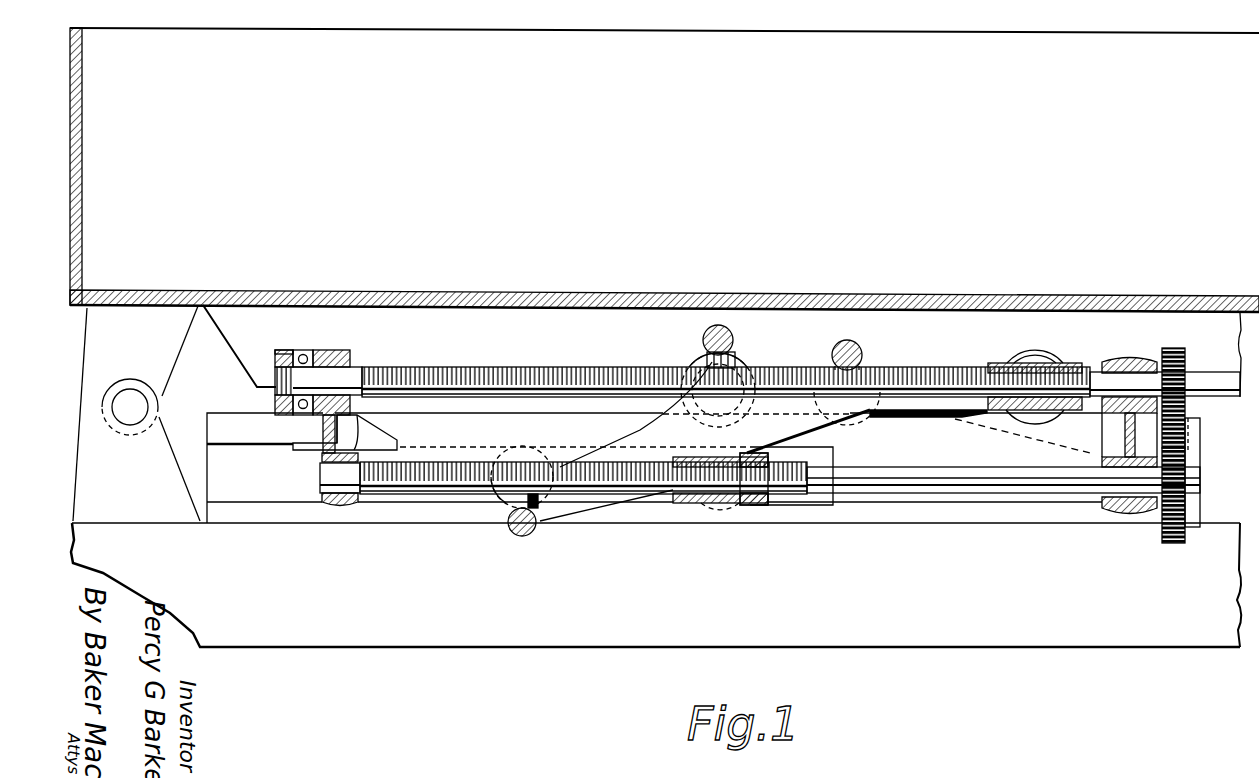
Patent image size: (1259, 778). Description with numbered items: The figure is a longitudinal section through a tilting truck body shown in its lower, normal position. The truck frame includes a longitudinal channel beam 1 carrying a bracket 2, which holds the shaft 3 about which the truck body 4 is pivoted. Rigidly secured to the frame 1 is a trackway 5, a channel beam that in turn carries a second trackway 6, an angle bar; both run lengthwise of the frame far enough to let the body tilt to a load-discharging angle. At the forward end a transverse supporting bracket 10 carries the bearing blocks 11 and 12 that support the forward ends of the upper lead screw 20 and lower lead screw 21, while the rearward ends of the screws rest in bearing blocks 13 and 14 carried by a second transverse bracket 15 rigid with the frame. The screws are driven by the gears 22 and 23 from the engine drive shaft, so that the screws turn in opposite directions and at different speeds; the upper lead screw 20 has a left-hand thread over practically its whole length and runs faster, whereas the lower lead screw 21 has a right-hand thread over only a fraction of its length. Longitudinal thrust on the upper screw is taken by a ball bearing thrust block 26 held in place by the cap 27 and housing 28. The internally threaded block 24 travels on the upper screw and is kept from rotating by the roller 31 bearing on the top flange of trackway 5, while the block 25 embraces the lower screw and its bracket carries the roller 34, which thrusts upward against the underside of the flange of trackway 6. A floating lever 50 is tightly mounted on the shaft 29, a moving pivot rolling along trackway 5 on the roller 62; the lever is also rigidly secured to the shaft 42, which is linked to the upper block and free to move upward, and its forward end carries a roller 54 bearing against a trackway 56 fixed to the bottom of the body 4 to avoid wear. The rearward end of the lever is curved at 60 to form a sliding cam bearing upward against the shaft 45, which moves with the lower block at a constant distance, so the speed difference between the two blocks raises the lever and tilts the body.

The longitudinal beam 1 is at (656, 585).
The bracket 2 is at (136, 413).
The shaft 3 is at (128, 413).
The truck body 4 is at (664, 170).
The trackway 5 is at (537, 414).
The second trackway 6 is at (840, 450).
The supporting bracket 10 is at (1110, 435).
The bearing block 11 is at (1131, 359).
The bearing block 12 is at (1105, 515).
The bearing block 13 is at (345, 349).
The bearing block 14 is at (347, 506).
The bracket 15 is at (318, 418).
The upper lead screw 20 is at (597, 369).
The lower lead screw 21 is at (925, 494).
The gear 22 is at (1188, 364).
The gear 23 is at (1186, 473).
The block 24 is at (1076, 362).
The block 25 is at (763, 505).
The ball bearing thrust block 26 is at (310, 349).
The cap 27 is at (276, 356).
The housing 28 is at (283, 349).
The shaft 29 is at (733, 340).
The roller 31 is at (1035, 349).
The roller 34 is at (730, 506).
The shaft 42 is at (862, 348).
The shaft 45 is at (525, 537).
The floating lever 50 is at (1002, 428).
The roller 54 is at (1190, 417).
The trackway 56 is at (248, 377).
The curved end 60 is at (630, 442).
The roller 62 is at (700, 362).